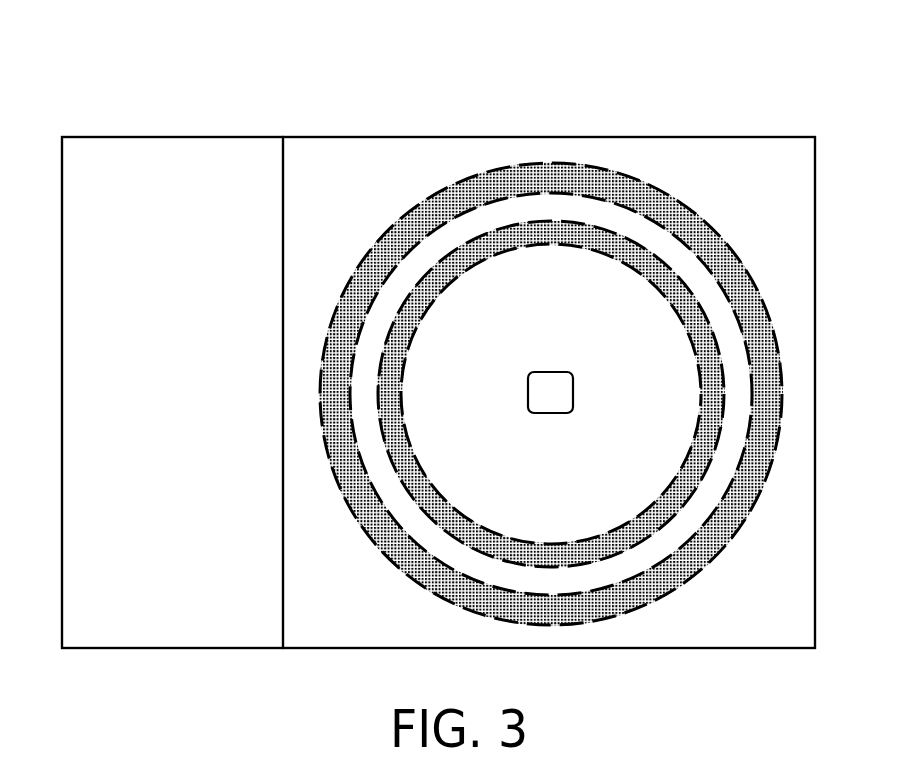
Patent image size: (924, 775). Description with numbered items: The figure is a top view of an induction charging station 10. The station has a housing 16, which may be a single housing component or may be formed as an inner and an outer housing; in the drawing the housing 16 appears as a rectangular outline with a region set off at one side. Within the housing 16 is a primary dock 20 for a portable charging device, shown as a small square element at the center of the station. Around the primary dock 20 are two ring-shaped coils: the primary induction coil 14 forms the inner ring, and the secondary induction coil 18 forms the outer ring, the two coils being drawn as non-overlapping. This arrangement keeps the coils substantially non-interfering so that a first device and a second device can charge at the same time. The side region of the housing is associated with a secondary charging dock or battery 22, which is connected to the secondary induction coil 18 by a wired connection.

The induction charging station 10 is at (118, 73).
The secondary charging dock or battery 22 is at (181, 137).
The housing 16 is at (356, 137).
The secondary induction coil 18 is at (705, 222).
The primary induction coil 14 is at (553, 222).
The primary dock 20 is at (573, 385).